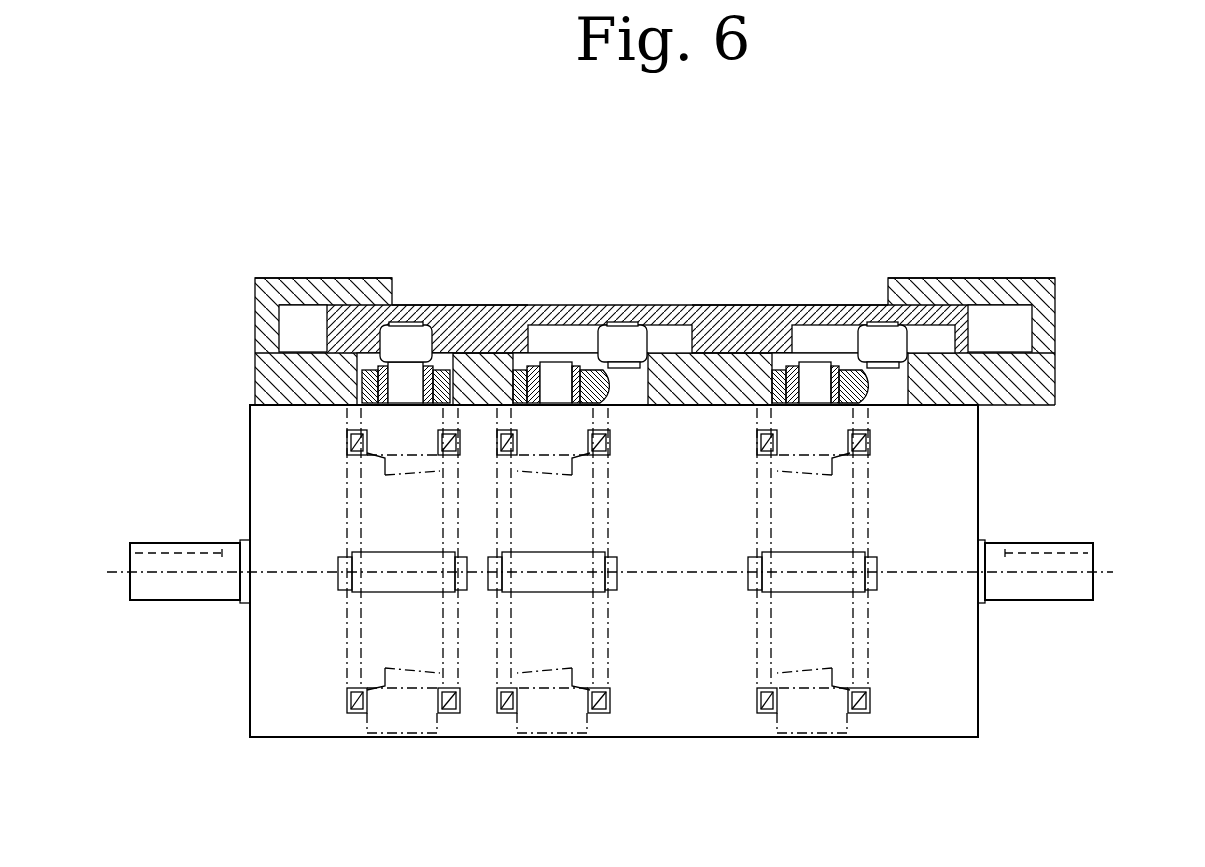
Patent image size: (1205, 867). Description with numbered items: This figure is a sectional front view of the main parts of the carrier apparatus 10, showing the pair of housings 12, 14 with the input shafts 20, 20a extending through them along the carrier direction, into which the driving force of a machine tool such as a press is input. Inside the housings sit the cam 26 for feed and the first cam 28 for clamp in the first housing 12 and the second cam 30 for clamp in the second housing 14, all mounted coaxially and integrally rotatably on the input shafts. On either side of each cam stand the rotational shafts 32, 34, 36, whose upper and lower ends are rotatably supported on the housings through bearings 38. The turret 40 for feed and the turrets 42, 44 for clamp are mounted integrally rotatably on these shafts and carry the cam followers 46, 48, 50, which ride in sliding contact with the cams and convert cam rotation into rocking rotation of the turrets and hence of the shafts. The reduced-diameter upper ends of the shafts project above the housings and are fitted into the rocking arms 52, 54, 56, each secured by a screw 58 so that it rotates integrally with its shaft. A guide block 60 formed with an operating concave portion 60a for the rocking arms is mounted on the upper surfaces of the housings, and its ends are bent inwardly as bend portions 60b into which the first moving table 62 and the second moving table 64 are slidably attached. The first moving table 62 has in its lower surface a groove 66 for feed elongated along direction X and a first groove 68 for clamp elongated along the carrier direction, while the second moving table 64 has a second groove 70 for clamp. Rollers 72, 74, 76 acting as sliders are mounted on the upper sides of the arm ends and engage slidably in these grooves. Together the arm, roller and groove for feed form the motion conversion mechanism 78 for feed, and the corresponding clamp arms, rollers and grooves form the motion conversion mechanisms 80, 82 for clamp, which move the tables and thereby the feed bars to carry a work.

The carrier apparatus 10 is at (1060, 457).
The first housing 12 is at (284, 738).
The second housing 14 is at (979, 692).
The input shaft 20 is at (148, 560).
The input shaft 20a is at (1073, 563).
The cam for feed 26 is at (383, 640).
The first cam for clamp 28 is at (585, 650).
The second cam for clamp 30 is at (843, 653).
The rotational shaft 32 is at (412, 725).
The rotational shaft 34 is at (562, 723).
The rotational shaft 36 is at (837, 725).
The bearing 38 is at (355, 445).
The turret for feed 40 is at (392, 583).
The turret for clamp 42 is at (587, 590).
The turret for clamp 44 is at (847, 590).
The cam follower 46 is at (338, 578).
The cam follower 48 is at (620, 560).
The cam follower 50 is at (878, 560).
The rocking arm for feed 52 is at (440, 305).
The rocking arm for clamp 54 is at (597, 368).
The rocking arm for clamp 56 is at (850, 366).
The screw 58 is at (792, 373).
The guide block 60 is at (255, 352).
The operating concave portion 60a is at (357, 360).
The bend portion 60b is at (347, 278).
The first moving table 62 is at (466, 305).
The second moving table 64 is at (873, 305).
The groove for feed 66 is at (390, 342).
The first groove for clamp 68 is at (673, 338).
The second groove for clamp 70 is at (970, 333).
The roller 72 is at (333, 278).
The roller 74 is at (638, 342).
The roller 76 is at (918, 348).
The motion conversion mechanism for feed 78 is at (495, 253).
The motion conversion mechanism for clamp 80 is at (660, 252).
The motion conversion mechanism for clamp 82 is at (940, 252).